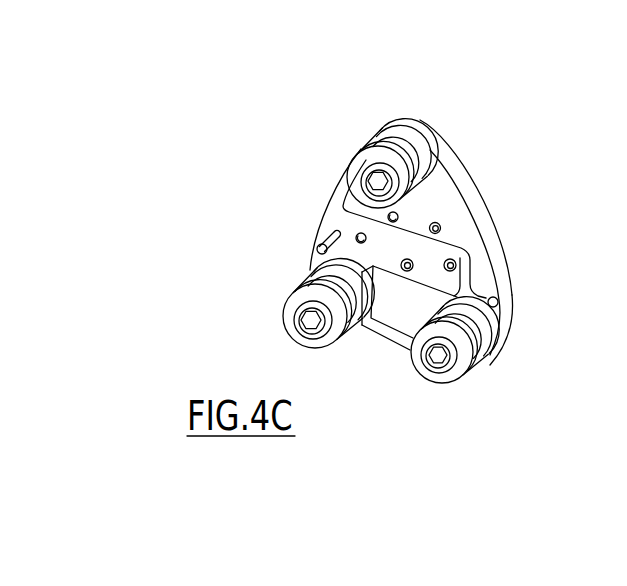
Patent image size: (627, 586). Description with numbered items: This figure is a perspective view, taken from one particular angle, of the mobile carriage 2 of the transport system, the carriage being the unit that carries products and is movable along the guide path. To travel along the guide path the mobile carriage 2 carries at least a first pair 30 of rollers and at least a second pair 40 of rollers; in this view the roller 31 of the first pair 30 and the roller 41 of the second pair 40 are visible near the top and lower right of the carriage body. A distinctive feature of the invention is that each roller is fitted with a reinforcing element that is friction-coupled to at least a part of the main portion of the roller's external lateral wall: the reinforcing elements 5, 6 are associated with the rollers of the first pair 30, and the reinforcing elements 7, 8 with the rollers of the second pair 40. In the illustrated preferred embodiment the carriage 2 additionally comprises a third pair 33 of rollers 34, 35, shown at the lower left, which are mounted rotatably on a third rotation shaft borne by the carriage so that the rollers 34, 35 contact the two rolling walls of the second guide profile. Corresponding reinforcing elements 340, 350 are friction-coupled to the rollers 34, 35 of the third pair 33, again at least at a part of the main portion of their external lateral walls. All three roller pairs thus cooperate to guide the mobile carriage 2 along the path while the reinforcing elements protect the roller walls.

The mobile carriage 2 is at (299, 196).
The first pair of rollers 30 is at (357, 130).
The roller 31 is at (381, 126).
The reinforcing element 5 is at (400, 124).
The reinforcing element 6 is at (352, 149).
The roller 34 is at (318, 240).
The third pair of rollers 33 is at (262, 319).
The reinforcing element 350 is at (286, 294).
The reinforcing element 340 is at (370, 322).
The roller 35 is at (357, 330).
The reinforcing element 7 is at (486, 304).
The roller 41 is at (488, 348).
The reinforcing element 8 is at (481, 380).
The second pair of rollers 40 is at (496, 386).